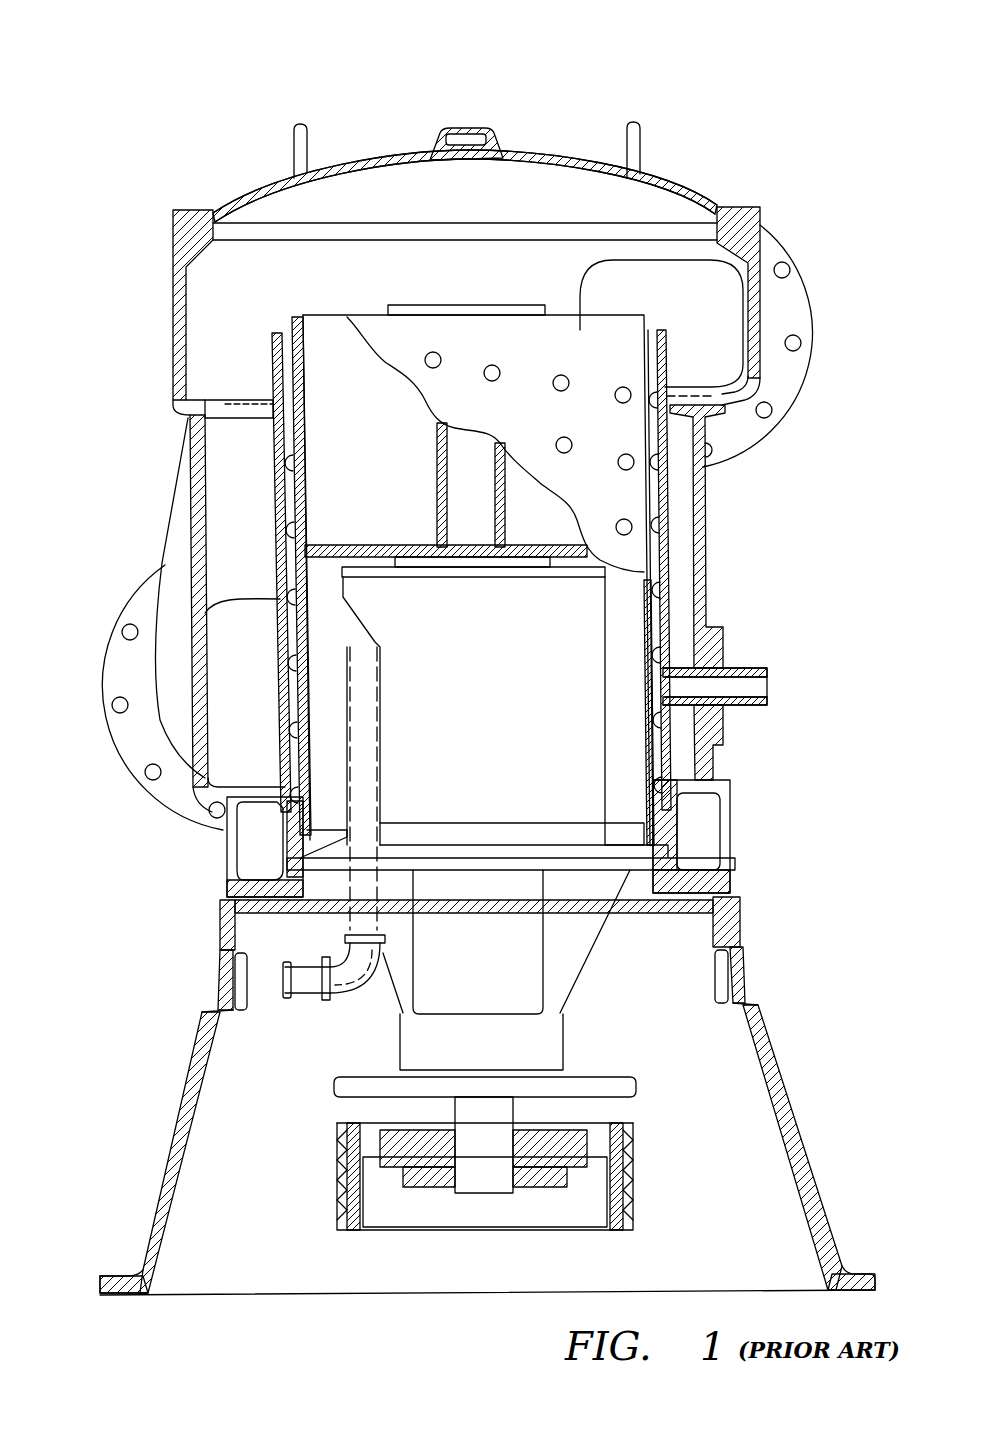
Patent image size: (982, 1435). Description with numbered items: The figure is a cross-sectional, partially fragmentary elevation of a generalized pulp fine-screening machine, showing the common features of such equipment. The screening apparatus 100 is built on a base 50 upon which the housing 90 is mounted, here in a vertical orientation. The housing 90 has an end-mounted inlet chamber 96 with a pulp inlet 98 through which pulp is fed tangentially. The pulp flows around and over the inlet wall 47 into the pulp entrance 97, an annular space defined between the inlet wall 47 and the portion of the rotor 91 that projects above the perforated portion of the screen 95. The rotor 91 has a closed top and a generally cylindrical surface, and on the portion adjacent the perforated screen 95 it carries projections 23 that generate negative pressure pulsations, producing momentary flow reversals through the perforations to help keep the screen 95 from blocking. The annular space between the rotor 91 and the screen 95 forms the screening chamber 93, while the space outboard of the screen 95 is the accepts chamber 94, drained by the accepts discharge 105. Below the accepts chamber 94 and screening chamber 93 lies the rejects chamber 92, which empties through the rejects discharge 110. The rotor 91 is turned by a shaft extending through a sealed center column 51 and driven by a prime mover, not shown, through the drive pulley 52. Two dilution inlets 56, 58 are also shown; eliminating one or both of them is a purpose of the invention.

The screening apparatus 100 is at (138, 108).
The inlet chamber 96 is at (210, 285).
The pulp entrance 97 is at (287, 332).
The inlet wall 47 is at (272, 366).
The housing 90 is at (197, 468).
The accepts chamber 94 is at (243, 562).
The accepts discharge 105 is at (102, 690).
The rejects chamber 92 is at (262, 840).
The dilution inlet 56 is at (285, 985).
The base 50 is at (180, 1215).
The projections 23 is at (645, 392).
The pulp inlet 98 is at (800, 277).
The rotor 91 is at (645, 467).
The screen 95 is at (665, 525).
The screening chamber 93 is at (658, 570).
The dilution inlet 58 is at (760, 687).
The rejects discharge 110 is at (725, 833).
The sealed center column 51 is at (535, 955).
The drive pulley 52 is at (640, 1147).